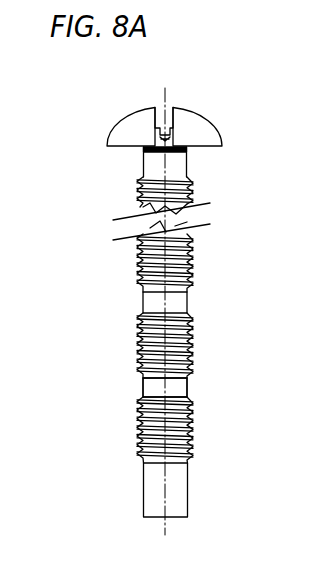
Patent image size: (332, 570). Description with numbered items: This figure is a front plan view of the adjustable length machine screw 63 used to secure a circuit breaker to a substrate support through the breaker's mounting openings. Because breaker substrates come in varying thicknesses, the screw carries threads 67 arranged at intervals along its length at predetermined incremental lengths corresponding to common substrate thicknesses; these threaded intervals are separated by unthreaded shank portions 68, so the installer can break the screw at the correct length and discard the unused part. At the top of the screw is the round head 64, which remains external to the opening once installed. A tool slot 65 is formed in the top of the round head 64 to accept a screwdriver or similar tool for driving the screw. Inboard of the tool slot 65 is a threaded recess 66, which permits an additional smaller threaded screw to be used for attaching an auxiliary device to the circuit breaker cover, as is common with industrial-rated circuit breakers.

The adjustable length machine screw 63 is at (128, 339).
The round head 64 is at (130, 112).
The tool slot 65 is at (168, 110).
The threaded recess 66 is at (170, 138).
The threads 67 is at (193, 268).
The unthreaded shank portions 68 is at (189, 383).